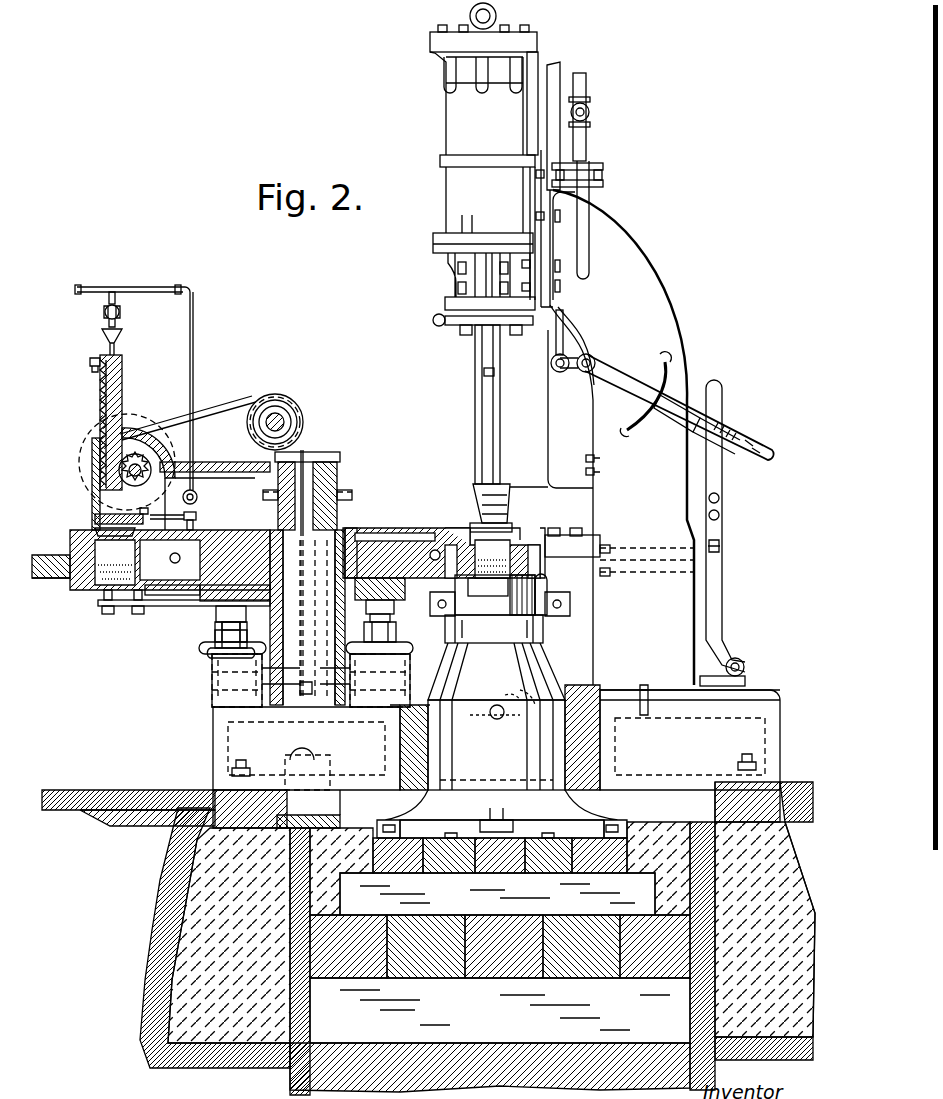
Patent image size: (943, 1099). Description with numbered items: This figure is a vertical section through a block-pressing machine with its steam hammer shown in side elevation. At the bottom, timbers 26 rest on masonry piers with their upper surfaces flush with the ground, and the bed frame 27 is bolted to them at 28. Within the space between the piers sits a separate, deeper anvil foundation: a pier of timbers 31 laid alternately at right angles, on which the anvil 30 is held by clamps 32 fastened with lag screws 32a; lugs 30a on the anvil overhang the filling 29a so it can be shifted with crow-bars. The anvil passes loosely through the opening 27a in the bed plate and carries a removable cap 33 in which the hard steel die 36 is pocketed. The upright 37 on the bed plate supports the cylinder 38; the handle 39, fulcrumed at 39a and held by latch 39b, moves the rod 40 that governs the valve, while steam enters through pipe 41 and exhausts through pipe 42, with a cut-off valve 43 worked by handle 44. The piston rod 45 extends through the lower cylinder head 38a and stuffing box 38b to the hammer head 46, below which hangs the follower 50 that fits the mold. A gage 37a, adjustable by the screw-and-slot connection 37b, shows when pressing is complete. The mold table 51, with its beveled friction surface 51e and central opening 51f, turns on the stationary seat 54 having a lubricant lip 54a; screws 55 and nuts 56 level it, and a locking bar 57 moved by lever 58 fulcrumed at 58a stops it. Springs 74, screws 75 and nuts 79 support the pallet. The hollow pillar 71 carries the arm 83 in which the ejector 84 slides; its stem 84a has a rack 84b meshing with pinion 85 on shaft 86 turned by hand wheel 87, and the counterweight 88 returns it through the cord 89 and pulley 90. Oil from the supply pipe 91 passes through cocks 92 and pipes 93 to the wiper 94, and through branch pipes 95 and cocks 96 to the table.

The timbers 26 is at (215, 815).
The bed frame 27 is at (496, 737).
The opening in the bed-plate 27a is at (605, 745).
The bolts 28 is at (232, 770).
The filling 29a is at (491, 932).
The anvil 30 is at (496, 716).
The lugs or projections 30a is at (388, 820).
The pier of timbers 31 is at (525, 873).
The clamps 32 is at (528, 838).
The spikes or lag screws 32a is at (640, 808).
The anvil top or cap 33 is at (520, 602).
The hard steel die 36 is at (478, 596).
The upright 37 is at (617, 417).
The gage or indicator 37a is at (555, 490).
The screw-and-slot connection 37b is at (604, 465).
The cylinder 38 is at (487, 151).
The lower cylinder head 38a is at (455, 302).
The stuffing box 38b is at (469, 334).
The handle 39 is at (640, 383).
The fulcrum of handle 39a is at (594, 357).
The latch 39b is at (670, 400).
The rod 40 is at (563, 334).
The pipe 41 is at (586, 87).
The exhaust pipe 42 is at (560, 78).
The cut-off valve 43 is at (591, 110).
The handle 44 is at (584, 222).
The piston rod 45 is at (501, 392).
The hammer head 46 is at (482, 498).
The follower 50 is at (547, 600).
The mold table 51 is at (395, 528).
The friction surface 51e is at (48, 586).
The central opening 51f is at (358, 598).
The table seat 54 is at (403, 600).
The lip 54a is at (210, 595).
The screws 55 is at (218, 632).
The nuts 56 is at (398, 645).
The locking bar 57 is at (588, 552).
The lever 58 is at (723, 572).
The fulcrum of lever 58a is at (745, 662).
The pillar 71 is at (307, 617).
The springs 74 is at (160, 606).
The screws 75 is at (138, 612).
The nuts 79 is at (100, 603).
The stationary arm 83 is at (320, 462).
The ejector 84 is at (70, 528).
The stem of the ejector 84a is at (100, 405).
The rack 84b is at (118, 398).
The pinion 85 is at (160, 457).
The shaft 86 is at (128, 476).
The hand wheel 87 is at (90, 446).
The counterweight 88 is at (325, 805).
The cord or wire 89 is at (310, 737).
The pulley 90 is at (293, 410).
The supply pipe 91 is at (100, 287).
The cocks 92 is at (120, 312).
The channels or pipes 93 is at (102, 343).
The wiper 94 is at (95, 520).
The branch pipes 95 is at (212, 495).
The cocks 96 is at (196, 518).